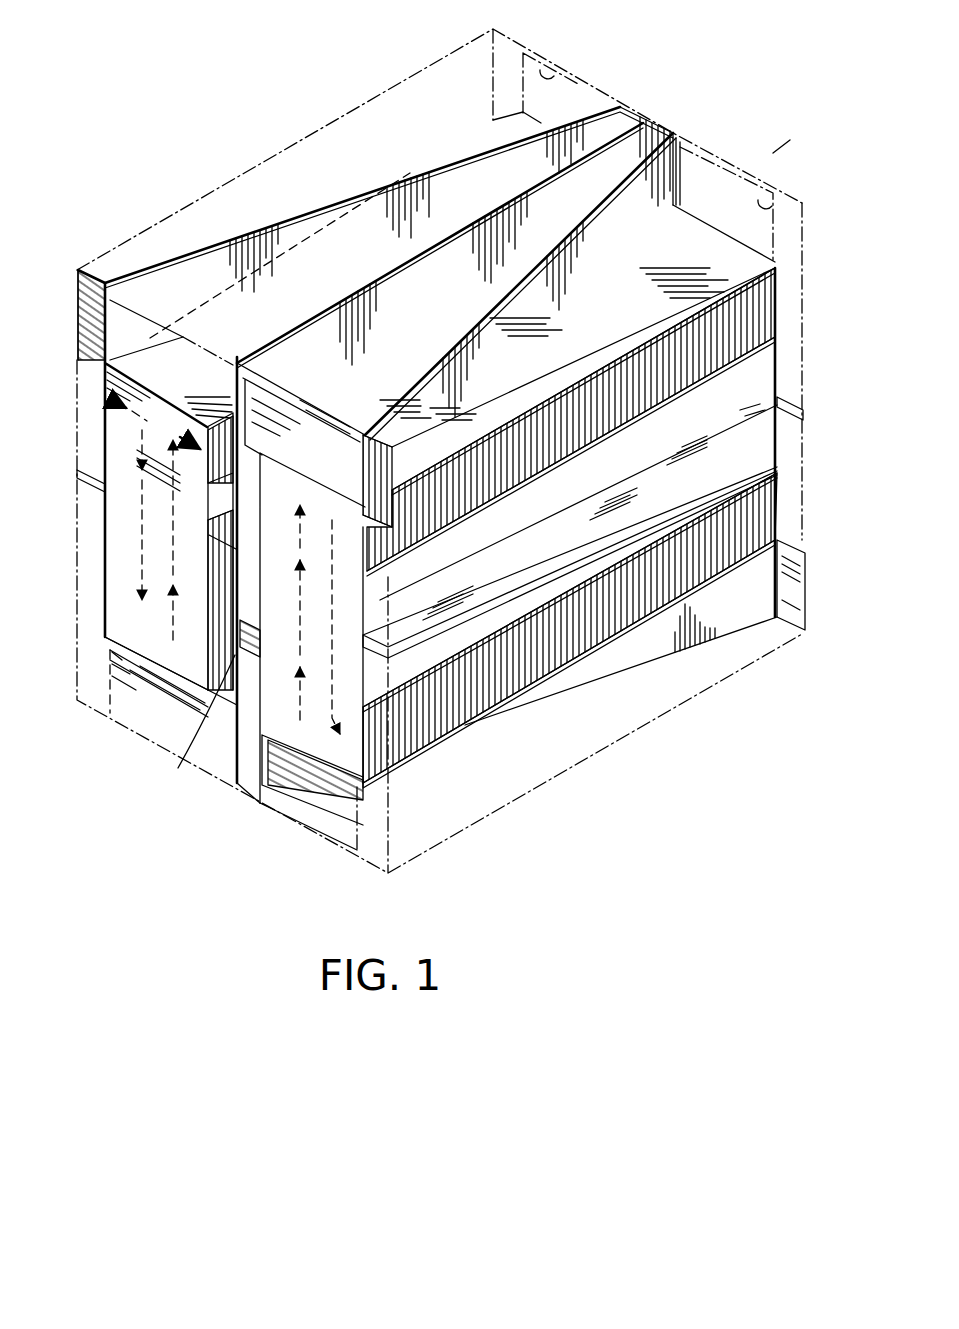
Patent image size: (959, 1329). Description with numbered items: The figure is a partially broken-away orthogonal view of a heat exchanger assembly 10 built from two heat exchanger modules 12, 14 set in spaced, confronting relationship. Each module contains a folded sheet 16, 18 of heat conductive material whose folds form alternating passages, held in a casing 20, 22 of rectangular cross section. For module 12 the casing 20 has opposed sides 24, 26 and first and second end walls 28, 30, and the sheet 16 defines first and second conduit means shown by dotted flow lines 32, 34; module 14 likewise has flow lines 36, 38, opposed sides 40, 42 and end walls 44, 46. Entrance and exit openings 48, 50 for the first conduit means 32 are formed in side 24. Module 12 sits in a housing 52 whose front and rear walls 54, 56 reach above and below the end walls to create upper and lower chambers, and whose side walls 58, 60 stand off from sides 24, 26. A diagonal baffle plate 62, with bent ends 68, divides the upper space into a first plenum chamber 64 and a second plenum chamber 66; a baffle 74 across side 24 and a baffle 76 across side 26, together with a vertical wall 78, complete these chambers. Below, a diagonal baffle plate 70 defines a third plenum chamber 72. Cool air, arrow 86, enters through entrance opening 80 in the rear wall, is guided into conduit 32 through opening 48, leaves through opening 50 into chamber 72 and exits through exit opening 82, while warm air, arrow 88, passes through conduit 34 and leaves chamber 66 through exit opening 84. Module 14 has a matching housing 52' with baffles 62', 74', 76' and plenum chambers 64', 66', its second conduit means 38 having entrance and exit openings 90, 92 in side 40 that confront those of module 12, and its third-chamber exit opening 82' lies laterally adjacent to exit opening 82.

The heat exchanger assembly 10 is at (670, 78).
The heat exchanger module 12 is at (790, 352).
The heat exchanger module 14 is at (100, 522).
The folded sheet 16 is at (770, 302).
The folded sheet 18 is at (222, 680).
The casing 20 is at (770, 378).
The casing 22 is at (118, 448).
The opposed side 24 is at (760, 450).
The opposed side 26 is at (262, 550).
The first end wall 28 is at (770, 254).
The second end wall 30 is at (428, 752).
The first conduit means 32 is at (307, 777).
The second conduit means 34 is at (290, 680).
The first conduit means 36 is at (100, 605).
The second conduit means 38 is at (160, 668).
The opposed side 40 is at (208, 590).
The opposed side 42 is at (110, 536).
The first end wall 44 is at (100, 407).
The second end wall 46 is at (170, 640).
The entrance opening 48 is at (535, 455).
The exit opening 50 is at (530, 670).
The housing 52 is at (439, 538).
The housing 52' is at (439, 149).
The front wall 54 is at (400, 852).
The rear wall 56 is at (786, 515).
The housing side wall 58 is at (420, 835).
The housing side wall 60 is at (253, 685).
The baffle plate 62 is at (583, 326).
The baffle 62' is at (448, 147).
The first plenum chamber 64 is at (520, 286).
The first plenum chamber 64' is at (439, 50).
The second plenum chamber 66 is at (440, 270).
The second plenum chamber 66' is at (375, 222).
The ends 68 is at (656, 135).
The baffle plate 70 is at (750, 640).
The third plenum chamber 72 is at (650, 688).
The baffle 74 is at (794, 414).
The baffle 74' is at (60, 479).
The baffle 76 is at (282, 612).
The baffle 76' is at (205, 531).
The vertical wall 78 is at (262, 355).
The entrance opening 80 is at (555, 62).
The exit opening 82 is at (312, 838).
The exit opening 82' is at (87, 701).
The exit opening 84 is at (272, 410).
The arrow 86 is at (712, 197).
The arrow 88 is at (808, 540).
The entrance opening 90 is at (193, 720).
The exit opening 92 is at (222, 462).